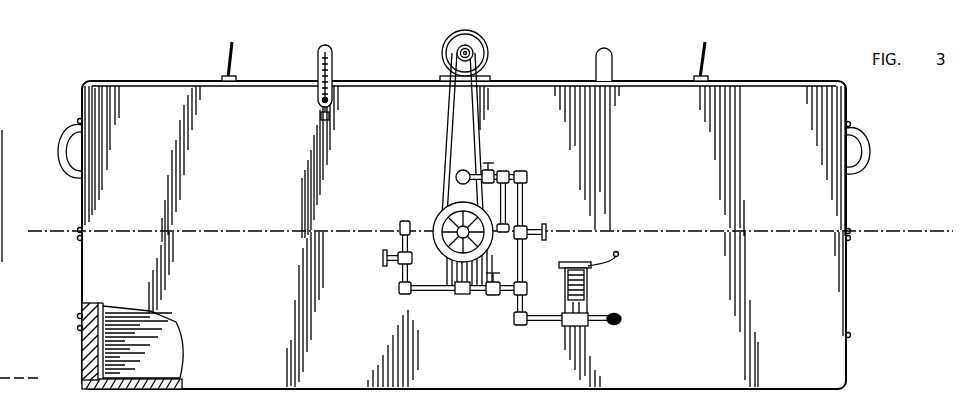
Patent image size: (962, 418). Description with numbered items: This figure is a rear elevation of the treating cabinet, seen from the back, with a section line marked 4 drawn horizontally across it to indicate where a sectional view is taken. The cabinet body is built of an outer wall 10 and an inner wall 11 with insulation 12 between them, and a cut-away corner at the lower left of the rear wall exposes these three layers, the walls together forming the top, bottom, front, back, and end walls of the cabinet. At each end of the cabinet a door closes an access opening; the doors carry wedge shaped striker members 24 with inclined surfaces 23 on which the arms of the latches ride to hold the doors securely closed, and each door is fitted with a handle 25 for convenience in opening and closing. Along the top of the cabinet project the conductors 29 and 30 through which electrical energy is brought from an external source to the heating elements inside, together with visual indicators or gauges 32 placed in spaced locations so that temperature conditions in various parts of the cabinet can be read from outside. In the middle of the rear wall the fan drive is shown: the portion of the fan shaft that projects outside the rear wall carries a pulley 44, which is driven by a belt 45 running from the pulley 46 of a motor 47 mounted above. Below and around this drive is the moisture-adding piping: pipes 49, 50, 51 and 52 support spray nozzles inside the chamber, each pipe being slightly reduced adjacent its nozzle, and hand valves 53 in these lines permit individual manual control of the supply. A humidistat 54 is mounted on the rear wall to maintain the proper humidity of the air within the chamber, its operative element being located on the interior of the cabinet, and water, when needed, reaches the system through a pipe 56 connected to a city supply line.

The section line 4- 4 is at (37, 245).
The outer wall 10 is at (108, 392).
The inner wall 11 is at (128, 390).
The insulation 12 is at (158, 390).
The inclined surfaces 23 is at (78, 228).
The wedge shaped striker members 24 is at (80, 241).
The handles 25 is at (56, 152).
The conductor 29 is at (707, 56).
The conductor 30 is at (226, 52).
The visual indicators or gauges 32 is at (335, 58).
The pulley 44 is at (442, 256).
The belt 45 is at (480, 135).
The pulley of motor 46 is at (474, 56).
The motor 47 is at (492, 40).
The pipe 49 is at (400, 222).
The pipe 50 is at (462, 294).
The pipe 51 is at (457, 172).
The pipe 52 is at (527, 228).
The hand valves 53 is at (493, 166).
The humidistat 54 is at (591, 278).
The pipe 56 is at (620, 314).